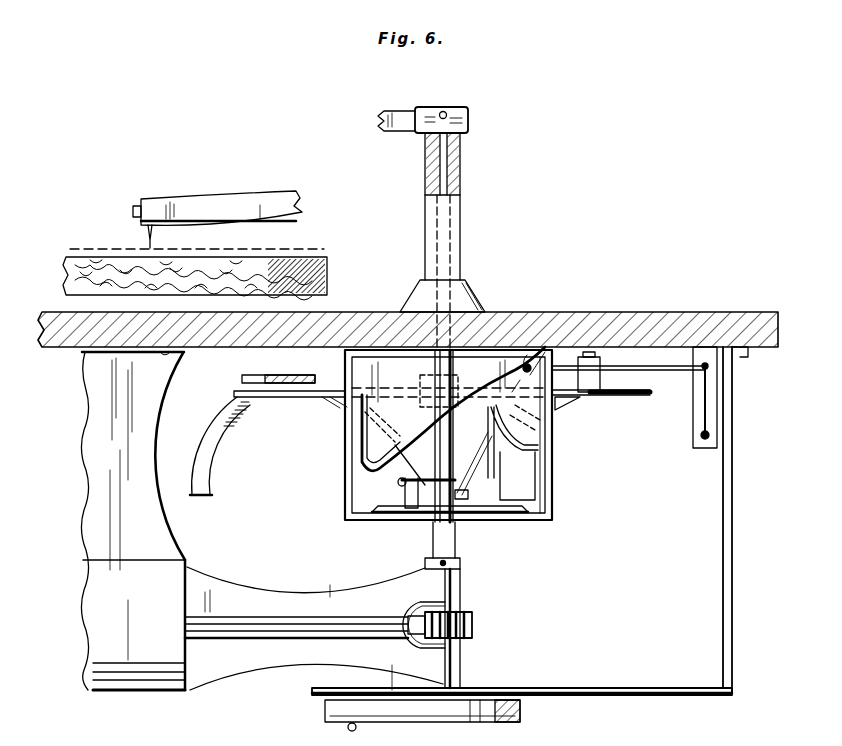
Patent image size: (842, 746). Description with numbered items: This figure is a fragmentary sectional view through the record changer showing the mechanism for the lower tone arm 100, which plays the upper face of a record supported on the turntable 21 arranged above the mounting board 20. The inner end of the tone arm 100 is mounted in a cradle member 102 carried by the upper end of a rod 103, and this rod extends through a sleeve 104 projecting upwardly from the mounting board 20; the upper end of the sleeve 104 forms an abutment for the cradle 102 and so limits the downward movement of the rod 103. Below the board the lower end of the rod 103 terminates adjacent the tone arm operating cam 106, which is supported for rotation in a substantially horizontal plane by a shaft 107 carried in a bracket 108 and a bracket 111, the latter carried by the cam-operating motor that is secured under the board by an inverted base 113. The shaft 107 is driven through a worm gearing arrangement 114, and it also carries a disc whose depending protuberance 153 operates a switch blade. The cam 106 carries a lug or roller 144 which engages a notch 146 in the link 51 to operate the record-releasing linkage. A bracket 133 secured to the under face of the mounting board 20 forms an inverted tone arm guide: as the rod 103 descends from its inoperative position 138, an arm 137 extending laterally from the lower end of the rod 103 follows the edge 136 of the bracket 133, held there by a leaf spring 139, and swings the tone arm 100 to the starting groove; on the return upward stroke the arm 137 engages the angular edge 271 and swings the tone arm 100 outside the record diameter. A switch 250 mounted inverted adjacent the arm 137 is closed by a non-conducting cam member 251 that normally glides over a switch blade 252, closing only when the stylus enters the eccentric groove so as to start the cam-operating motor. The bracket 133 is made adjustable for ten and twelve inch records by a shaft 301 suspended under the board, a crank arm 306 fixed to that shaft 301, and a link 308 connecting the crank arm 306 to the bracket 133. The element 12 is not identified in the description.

The mounting board 20 is at (56, 347).
The turntable 21 is at (330, 258).
The lower tone arm 100 is at (234, 202).
The cradle member 102 is at (468, 123).
The rod 103 is at (440, 185).
The sleeve 104 is at (462, 247).
The inverted base 113 is at (96, 486).
The base foot 12 is at (157, 676).
The notch 146 is at (242, 380).
The link 51 is at (290, 375).
The bracket 111 is at (351, 606).
The worm gearing arrangement 114 is at (472, 626).
The shaft 107 is at (456, 544).
The protuberance 153 is at (348, 730).
The bracket 108 is at (723, 539).
The crank arm 306 is at (705, 409).
The shaft 301 is at (704, 445).
The link 308 is at (688, 371).
The lug or roller 144 is at (600, 364).
The tone arm operating cam 106 is at (632, 400).
The angular edge 271 is at (430, 417).
The inoperative position 138 is at (545, 347).
The bracket 133 is at (364, 441).
The leaf spring 139 is at (538, 434).
The edge 136 is at (494, 486).
The arm 137 is at (417, 476).
The non-conducting cam member 251 is at (400, 486).
The switch blade 252 is at (468, 494).
The switch 250 is at (400, 513).